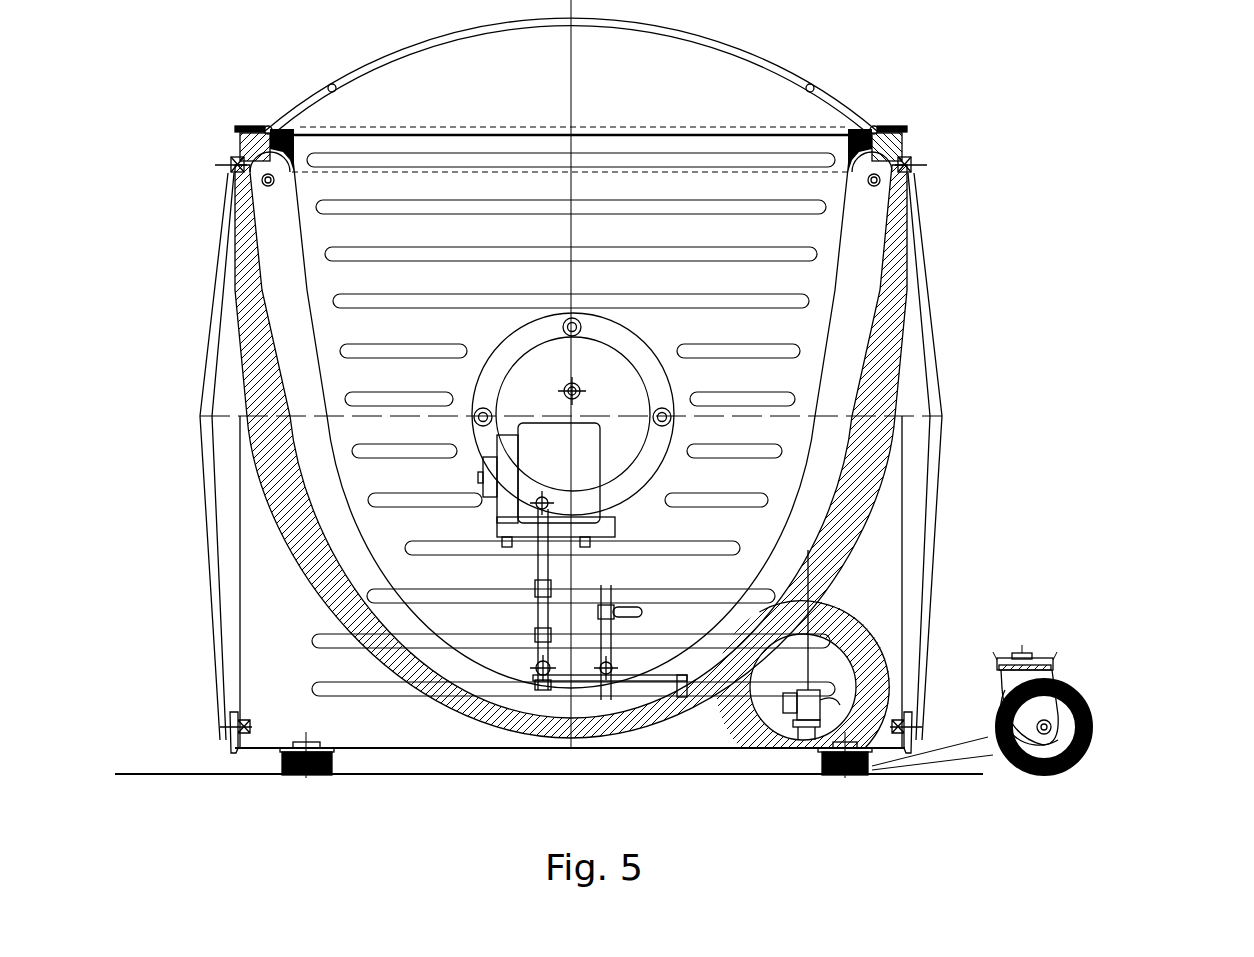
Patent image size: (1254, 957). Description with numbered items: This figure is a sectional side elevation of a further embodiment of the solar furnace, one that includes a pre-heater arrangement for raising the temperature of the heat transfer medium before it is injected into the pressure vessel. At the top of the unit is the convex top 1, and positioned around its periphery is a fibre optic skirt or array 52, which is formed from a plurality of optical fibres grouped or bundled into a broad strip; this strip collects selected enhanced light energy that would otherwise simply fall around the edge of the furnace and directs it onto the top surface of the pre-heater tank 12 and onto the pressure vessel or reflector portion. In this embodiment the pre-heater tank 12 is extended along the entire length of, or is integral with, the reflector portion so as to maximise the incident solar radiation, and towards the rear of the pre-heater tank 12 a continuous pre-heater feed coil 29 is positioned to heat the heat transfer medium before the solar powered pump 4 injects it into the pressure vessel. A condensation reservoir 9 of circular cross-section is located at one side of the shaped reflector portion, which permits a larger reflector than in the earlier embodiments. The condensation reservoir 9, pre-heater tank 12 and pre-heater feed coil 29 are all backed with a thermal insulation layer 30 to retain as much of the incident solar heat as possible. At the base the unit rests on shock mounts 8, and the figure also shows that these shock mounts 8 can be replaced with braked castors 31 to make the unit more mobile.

The convex top 1 is at (692, 98).
The fibre optic skirt or array 52 is at (267, 130).
The pre-heater tank 12 is at (275, 243).
The thermal insulation layer 30 is at (890, 307).
The pre-heater feed coil 29 is at (868, 383).
The solar powered pump 4 is at (587, 462).
The braked castors 31 is at (1035, 680).
The condensation reservoir 9 is at (777, 718).
The shock mounts 8 is at (856, 766).